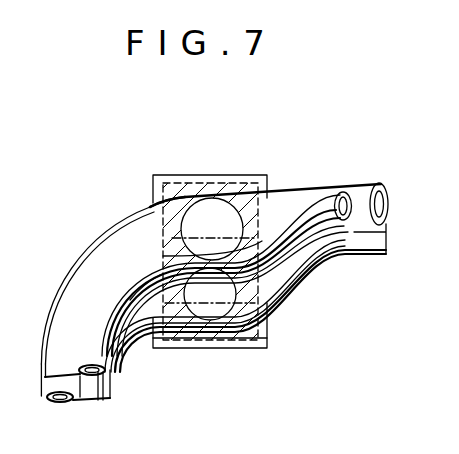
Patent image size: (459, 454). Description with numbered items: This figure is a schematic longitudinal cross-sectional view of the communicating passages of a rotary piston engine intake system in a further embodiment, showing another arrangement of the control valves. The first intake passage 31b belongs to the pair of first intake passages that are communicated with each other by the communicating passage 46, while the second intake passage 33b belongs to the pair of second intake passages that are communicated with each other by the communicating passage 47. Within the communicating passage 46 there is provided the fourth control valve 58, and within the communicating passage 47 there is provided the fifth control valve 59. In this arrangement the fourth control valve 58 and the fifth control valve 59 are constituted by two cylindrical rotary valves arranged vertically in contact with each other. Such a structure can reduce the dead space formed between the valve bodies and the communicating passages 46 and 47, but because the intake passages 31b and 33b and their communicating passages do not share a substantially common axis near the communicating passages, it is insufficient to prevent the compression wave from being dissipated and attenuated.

The first intake passage 31b is at (310, 273).
The second intake passage 33b is at (303, 188).
The communicating passage 46 is at (207, 333).
The communicating passage 47 is at (213, 212).
The fourth control valve 58 is at (142, 283).
The fifth control valve 59 is at (155, 205).